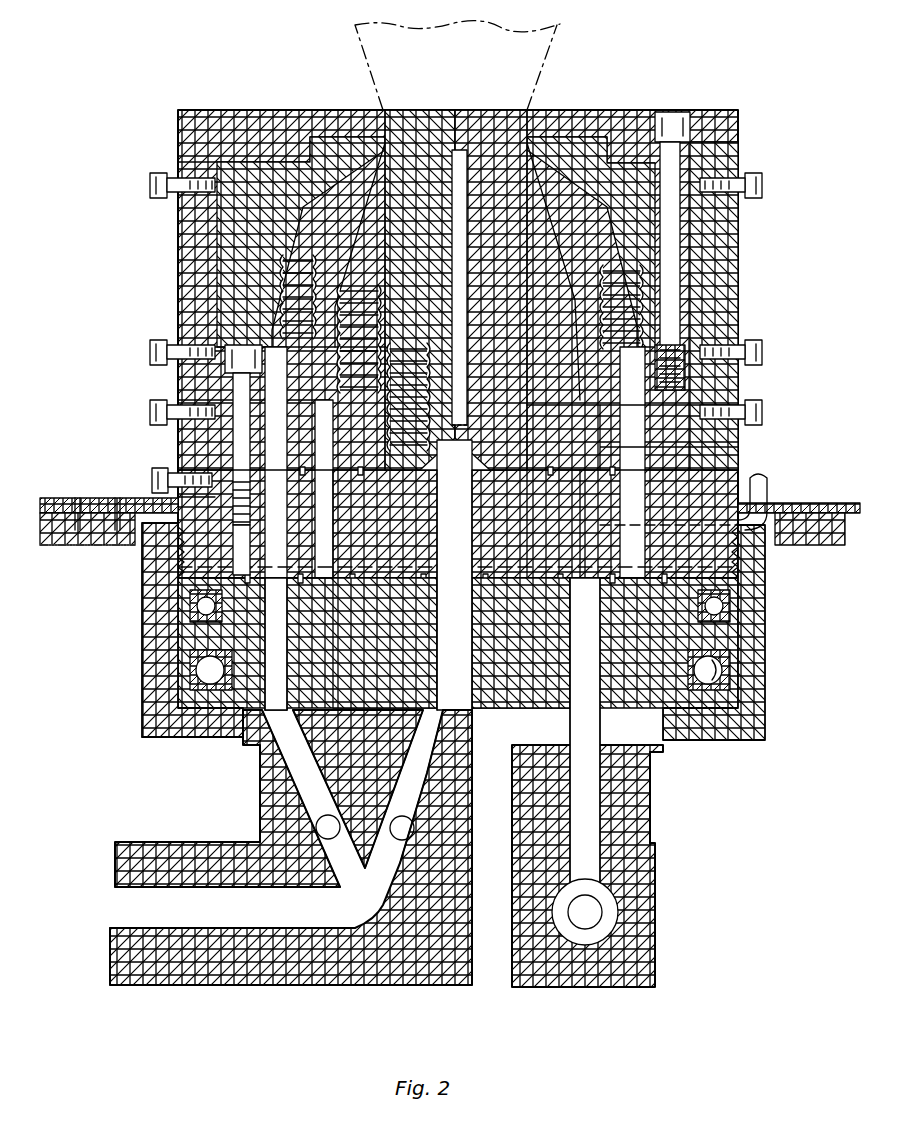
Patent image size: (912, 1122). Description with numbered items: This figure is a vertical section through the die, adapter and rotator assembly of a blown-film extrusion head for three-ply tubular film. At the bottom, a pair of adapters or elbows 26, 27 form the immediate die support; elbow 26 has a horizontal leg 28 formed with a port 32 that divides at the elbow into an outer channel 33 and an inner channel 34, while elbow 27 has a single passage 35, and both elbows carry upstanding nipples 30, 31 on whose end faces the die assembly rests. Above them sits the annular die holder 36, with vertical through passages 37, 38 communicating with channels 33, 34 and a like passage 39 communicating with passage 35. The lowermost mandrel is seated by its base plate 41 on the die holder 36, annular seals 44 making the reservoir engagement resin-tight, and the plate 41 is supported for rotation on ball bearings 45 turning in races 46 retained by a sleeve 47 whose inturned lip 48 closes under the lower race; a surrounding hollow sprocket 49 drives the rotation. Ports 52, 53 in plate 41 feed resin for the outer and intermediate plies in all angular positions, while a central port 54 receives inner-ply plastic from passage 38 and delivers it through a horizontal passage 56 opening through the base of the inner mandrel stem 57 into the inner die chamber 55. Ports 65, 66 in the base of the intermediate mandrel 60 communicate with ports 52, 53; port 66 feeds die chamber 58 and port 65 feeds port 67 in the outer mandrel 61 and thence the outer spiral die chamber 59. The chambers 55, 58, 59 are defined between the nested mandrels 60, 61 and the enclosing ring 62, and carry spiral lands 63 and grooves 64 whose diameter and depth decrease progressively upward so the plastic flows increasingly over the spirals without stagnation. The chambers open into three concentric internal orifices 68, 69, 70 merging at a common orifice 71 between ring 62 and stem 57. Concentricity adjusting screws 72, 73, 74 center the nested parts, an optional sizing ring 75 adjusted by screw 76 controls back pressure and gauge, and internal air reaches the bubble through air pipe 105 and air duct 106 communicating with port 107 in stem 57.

The adapter or elbow 26 is at (308, 1010).
The adapter or elbow 27 is at (668, 970).
The horizontal leg 28 is at (110, 975).
The upstanding nipple 30 is at (260, 828).
The upstanding nipple 31 is at (640, 858).
The port 32 is at (110, 920).
The outer channel 33 is at (285, 775).
The inner channel 34 is at (435, 790).
The port or passage 35 is at (605, 808).
The annular base plate or die holder 36 is at (178, 648).
The vertical through passage 37 is at (225, 738).
The vertical through passage 38 is at (437, 634).
The vertical through passage or channel 39 is at (580, 640).
The base plate of lowermost mandrel 41 is at (760, 575).
The annular seals 44 is at (285, 592).
The ball bearings 45 is at (190, 604).
The bearing races 46 is at (190, 675).
The sleeve 47 is at (740, 670).
The inturned lip 48 is at (162, 737).
The hollow sprocket 49 is at (70, 545).
The vertical through port 52 is at (262, 552).
The vertical through port 53 is at (458, 551).
The central port 54 is at (376, 524).
The die chamber for inner ply 55 is at (455, 449).
The horizontal passage 56 is at (532, 524).
The inner mandrel stem 57 is at (527, 112).
The die chamber for intermediate ply 58 is at (560, 404).
The outer spiral die chamber 59 is at (268, 345).
The intermediate mandrel 60 is at (385, 222).
The outer mandrel 61 is at (301, 242).
The ring or sleeve 62 is at (178, 238).
The lands 63 is at (290, 268).
The grooves 64 is at (598, 222).
The vertical through port 65 is at (322, 512).
The vertical through port 66 is at (322, 488).
The port 67 is at (670, 336).
The internal orifice 68 is at (385, 112).
The internal orifice 69 is at (385, 195).
The internal orifice 70 is at (527, 218).
The common orifice 71 is at (410, 112).
The concentricity adjusting screw 72 is at (150, 478).
The concentricity adjusting screw 73 is at (150, 408).
The concentricity adjusting screw 74 is at (150, 350).
The sizing ring 75 is at (178, 138).
The screw 76 is at (150, 190).
The air pipe 105 is at (765, 485).
The air duct 106 is at (655, 530).
The port 107 is at (470, 326).